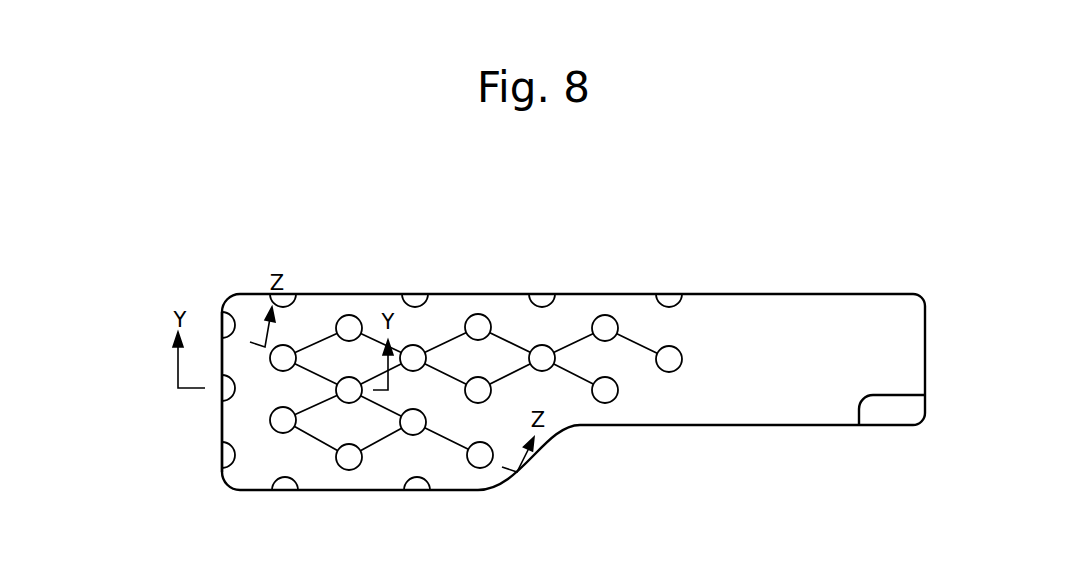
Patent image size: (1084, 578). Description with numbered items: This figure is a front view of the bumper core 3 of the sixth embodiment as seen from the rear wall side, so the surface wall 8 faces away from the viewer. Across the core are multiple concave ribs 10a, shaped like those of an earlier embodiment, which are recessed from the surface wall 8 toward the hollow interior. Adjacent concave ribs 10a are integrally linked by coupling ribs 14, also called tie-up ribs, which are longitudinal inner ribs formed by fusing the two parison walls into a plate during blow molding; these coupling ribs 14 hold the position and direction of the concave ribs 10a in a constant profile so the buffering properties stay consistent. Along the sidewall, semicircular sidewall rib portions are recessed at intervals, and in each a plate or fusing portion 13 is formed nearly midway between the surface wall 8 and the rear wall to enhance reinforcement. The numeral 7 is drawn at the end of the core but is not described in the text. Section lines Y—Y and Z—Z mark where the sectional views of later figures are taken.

The bumper core 3 is at (708, 294).
The end portion 7 is at (218, 352).
The surface wall 8 is at (748, 377).
The concave ribs 10a is at (417, 347).
The fusing portion 13 is at (228, 455).
The coupling rib 14 is at (320, 337).